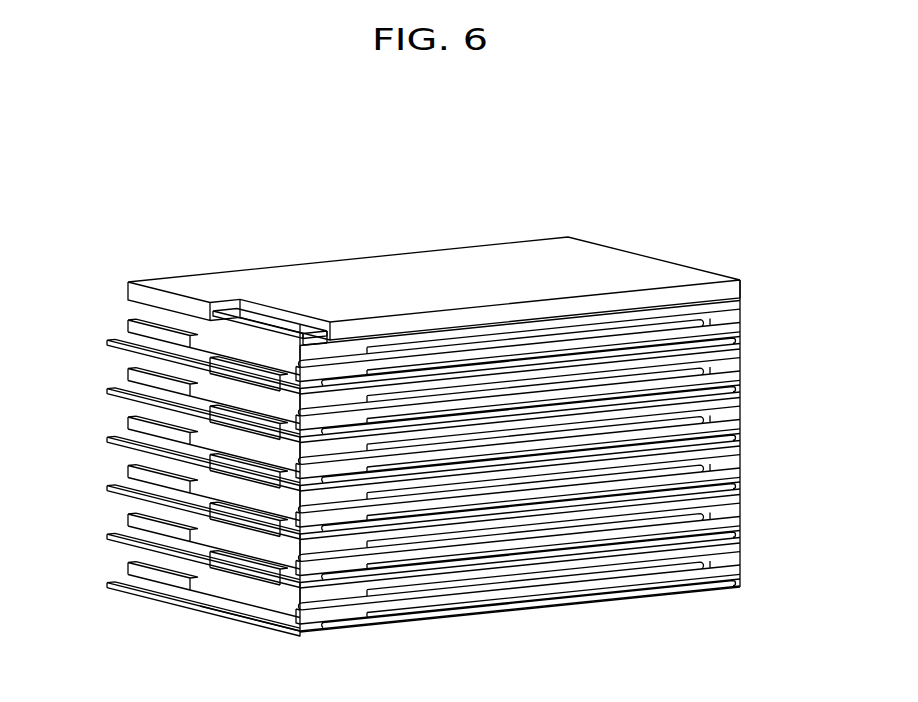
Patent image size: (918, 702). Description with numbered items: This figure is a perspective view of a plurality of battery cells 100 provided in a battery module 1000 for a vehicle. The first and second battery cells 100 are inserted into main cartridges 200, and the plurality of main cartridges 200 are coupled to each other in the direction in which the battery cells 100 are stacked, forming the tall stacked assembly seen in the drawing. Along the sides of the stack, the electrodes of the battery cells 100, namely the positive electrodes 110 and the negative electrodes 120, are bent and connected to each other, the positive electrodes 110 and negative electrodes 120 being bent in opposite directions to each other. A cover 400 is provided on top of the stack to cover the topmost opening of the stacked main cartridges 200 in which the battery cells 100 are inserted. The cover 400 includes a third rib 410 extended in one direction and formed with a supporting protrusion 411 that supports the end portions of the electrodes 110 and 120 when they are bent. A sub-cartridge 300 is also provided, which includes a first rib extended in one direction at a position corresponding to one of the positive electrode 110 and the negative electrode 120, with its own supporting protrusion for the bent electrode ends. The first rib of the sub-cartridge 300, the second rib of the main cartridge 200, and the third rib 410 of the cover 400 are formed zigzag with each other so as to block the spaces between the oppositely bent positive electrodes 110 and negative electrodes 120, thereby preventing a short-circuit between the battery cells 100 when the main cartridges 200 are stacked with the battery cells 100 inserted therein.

The battery module 1000 is at (580, 134).
The battery cell 100 is at (740, 304).
The positive electrode 110 is at (106, 388).
The negative electrode 120 is at (233, 612).
The main cartridge 200 is at (740, 428).
The sub-cartridge 300 is at (362, 447).
The cover 400 is at (190, 282).
The third rib 410 is at (240, 308).
The supporting protrusion 411 is at (268, 325).